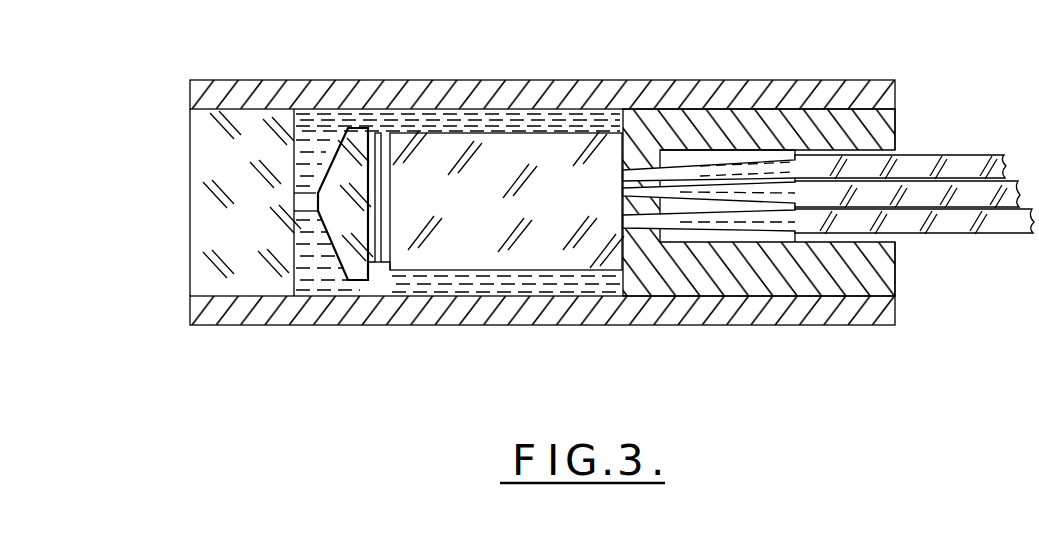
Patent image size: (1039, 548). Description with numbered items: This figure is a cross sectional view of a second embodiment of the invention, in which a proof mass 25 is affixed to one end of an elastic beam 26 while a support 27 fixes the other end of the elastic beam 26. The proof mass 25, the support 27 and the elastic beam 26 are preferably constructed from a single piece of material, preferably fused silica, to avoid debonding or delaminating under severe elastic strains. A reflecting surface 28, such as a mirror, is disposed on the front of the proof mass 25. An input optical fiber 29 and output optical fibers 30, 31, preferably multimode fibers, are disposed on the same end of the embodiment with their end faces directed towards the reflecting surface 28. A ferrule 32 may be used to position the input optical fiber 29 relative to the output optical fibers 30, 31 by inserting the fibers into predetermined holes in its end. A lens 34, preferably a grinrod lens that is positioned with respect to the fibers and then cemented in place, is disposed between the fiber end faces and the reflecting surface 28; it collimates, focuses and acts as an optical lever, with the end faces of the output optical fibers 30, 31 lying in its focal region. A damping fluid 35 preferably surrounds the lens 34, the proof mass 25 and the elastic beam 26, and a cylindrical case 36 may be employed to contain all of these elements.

The proof mass 25 is at (348, 270).
The elastic beam 26 is at (306, 196).
The support 27 is at (204, 162).
The reflecting surface 28 is at (378, 140).
The input optical fiber 29 is at (735, 215).
The output optical fiber 30 is at (722, 160).
The output optical fiber 31 is at (772, 185).
The ferrule 32 is at (662, 115).
The lens 34 is at (437, 262).
The damping fluid 35 is at (540, 285).
The cylindrical case 36 is at (573, 80).